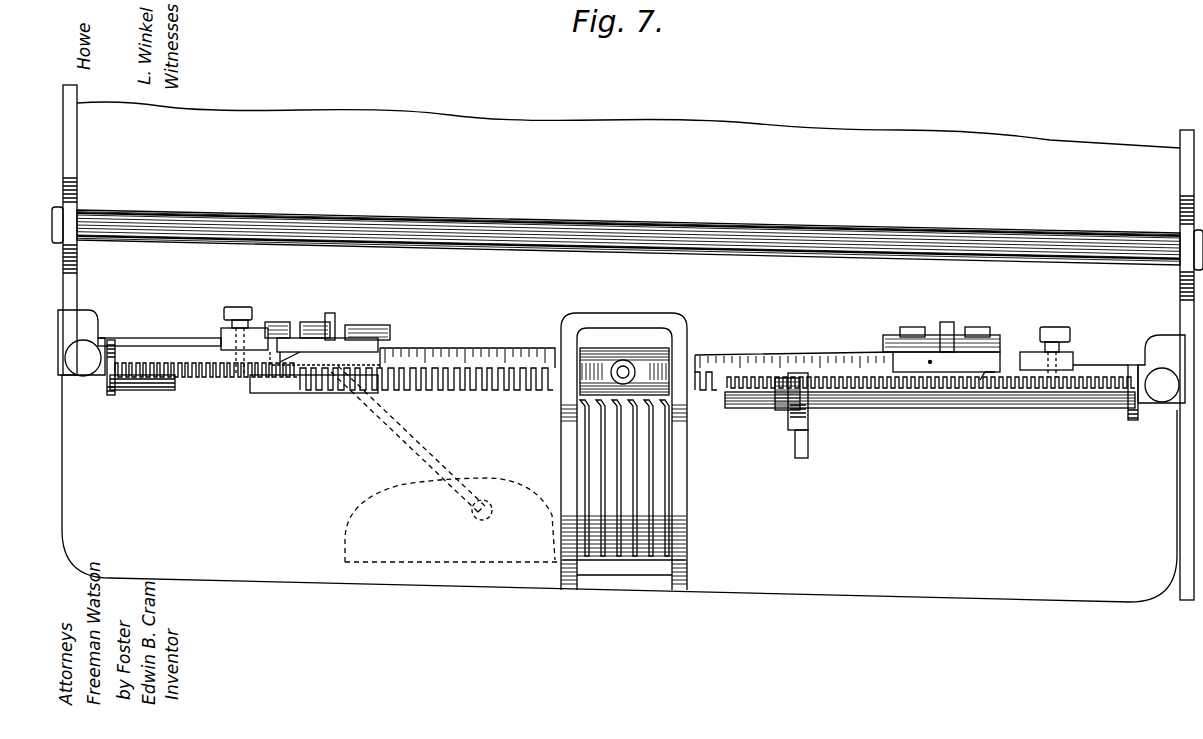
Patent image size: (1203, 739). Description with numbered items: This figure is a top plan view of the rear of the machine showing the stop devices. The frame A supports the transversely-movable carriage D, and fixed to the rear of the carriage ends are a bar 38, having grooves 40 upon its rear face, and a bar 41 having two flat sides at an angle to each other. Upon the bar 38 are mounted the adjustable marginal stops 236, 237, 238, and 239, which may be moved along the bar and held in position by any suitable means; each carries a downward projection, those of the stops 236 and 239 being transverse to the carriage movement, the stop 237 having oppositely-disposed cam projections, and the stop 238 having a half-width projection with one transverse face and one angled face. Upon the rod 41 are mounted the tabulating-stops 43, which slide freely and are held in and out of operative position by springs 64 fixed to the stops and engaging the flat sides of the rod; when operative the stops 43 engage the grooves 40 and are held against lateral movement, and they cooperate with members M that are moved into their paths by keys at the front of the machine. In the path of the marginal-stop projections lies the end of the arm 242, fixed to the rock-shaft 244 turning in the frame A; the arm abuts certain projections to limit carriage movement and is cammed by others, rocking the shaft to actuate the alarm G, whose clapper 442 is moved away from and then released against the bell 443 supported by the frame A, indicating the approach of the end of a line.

The marginal stop 236 is at (221, 336).
The marginal stop 237 is at (372, 348).
The bar 38 is at (493, 350).
The grooves 40 is at (526, 385).
The arm 242 is at (625, 371).
The marginal stop 238 is at (893, 357).
The marginal stop 239 is at (1073, 358).
The bar 41 is at (987, 396).
The tabulating-stops 43 is at (815, 415).
The springs 64 is at (776, 416).
The rock-shaft 244 is at (1197, 395).
The clapper 442 is at (378, 408).
The bell 443 is at (355, 530).
The frame A is at (621, 352).
The carriage D is at (77, 188).
The alarm G is at (492, 489).
The members M is at (635, 451).